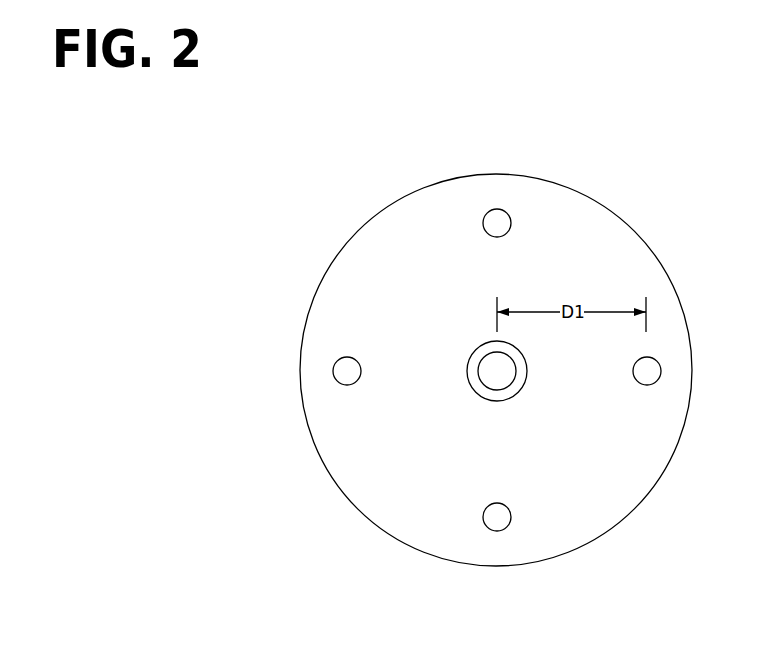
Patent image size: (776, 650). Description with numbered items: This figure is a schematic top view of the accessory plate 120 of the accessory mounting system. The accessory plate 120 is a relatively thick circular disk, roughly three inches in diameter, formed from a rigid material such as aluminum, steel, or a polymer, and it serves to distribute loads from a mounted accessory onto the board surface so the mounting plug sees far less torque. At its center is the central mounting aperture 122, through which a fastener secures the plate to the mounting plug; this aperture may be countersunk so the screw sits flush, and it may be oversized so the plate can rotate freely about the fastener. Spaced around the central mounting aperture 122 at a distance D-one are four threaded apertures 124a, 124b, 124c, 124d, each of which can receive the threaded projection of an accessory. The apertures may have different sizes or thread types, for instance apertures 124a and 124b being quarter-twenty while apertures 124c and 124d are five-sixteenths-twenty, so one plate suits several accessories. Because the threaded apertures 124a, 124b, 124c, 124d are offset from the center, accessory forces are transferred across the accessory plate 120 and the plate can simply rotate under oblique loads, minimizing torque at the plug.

The accessory plate 120 is at (368, 240).
The central mounting aperture 122 is at (497, 371).
The threaded aperture 124a is at (347, 372).
The threaded aperture 124b is at (647, 371).
The threaded aperture 124c is at (497, 223).
The threaded aperture 124d is at (497, 517).